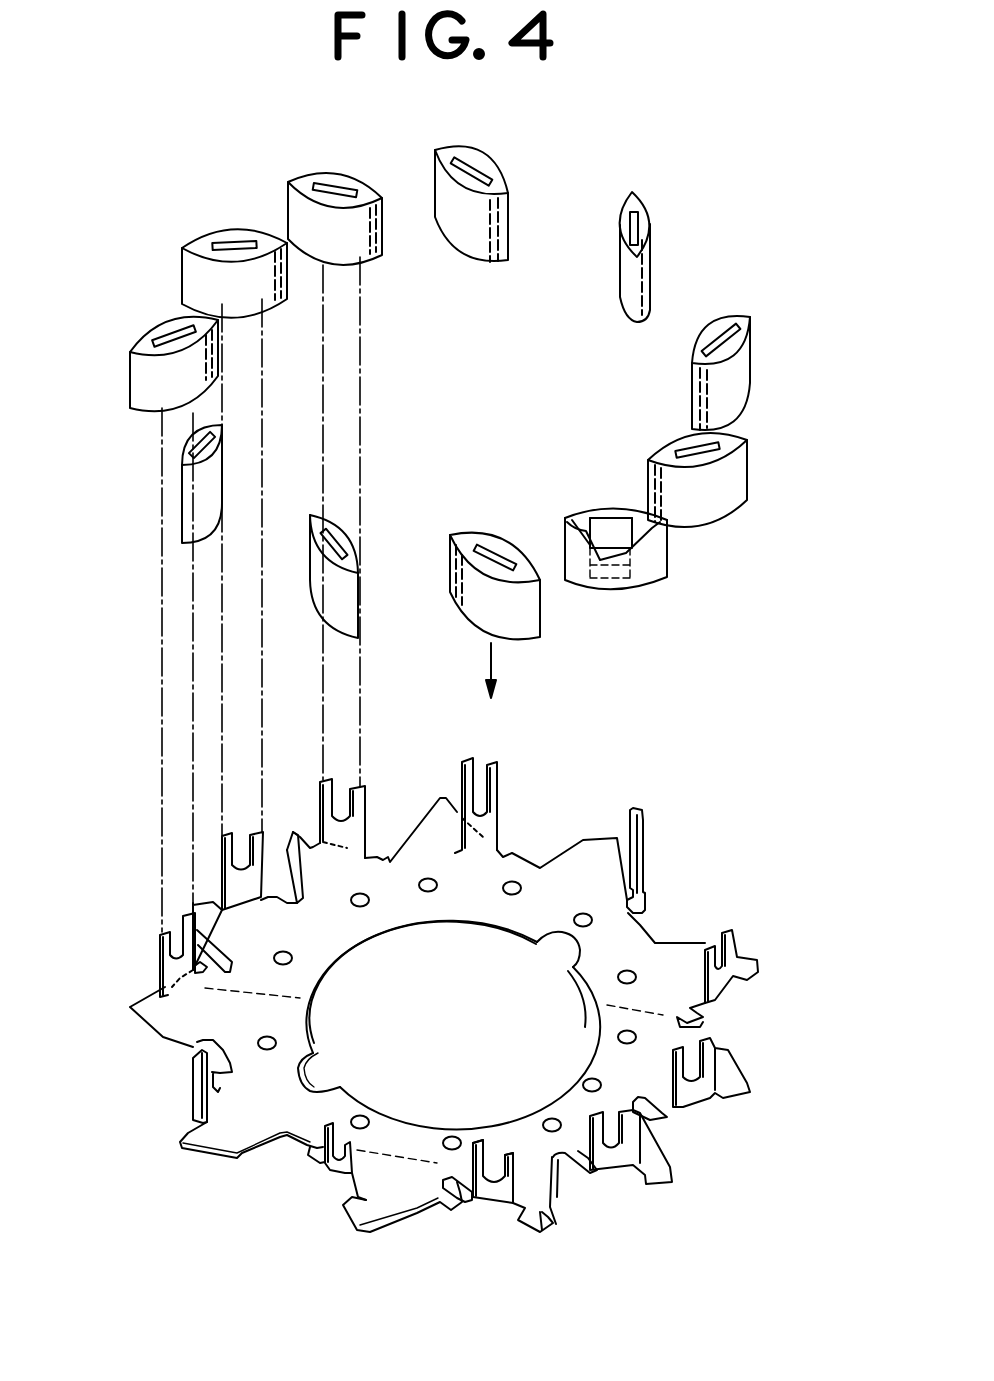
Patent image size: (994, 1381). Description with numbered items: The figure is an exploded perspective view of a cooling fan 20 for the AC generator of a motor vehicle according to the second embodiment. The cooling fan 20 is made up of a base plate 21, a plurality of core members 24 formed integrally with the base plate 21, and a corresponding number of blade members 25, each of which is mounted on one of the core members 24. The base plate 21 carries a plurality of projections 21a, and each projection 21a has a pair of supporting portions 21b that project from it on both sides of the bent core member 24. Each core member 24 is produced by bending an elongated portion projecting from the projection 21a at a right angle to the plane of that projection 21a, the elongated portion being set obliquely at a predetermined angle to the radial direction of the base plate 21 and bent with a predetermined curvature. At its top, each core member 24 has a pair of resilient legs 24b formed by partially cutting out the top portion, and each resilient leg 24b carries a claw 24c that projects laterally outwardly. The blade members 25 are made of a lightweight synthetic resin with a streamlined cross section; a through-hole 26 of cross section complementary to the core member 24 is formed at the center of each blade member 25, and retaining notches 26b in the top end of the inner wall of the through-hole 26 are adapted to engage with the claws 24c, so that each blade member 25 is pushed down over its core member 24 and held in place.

The cooling fan 20 is at (707, 867).
The base plate 21 is at (533, 1175).
The projection 21a is at (557, 1190).
The supporting portion 21b is at (455, 1195).
The core member 24 is at (493, 1200).
The resilient leg 24b is at (500, 1145).
The claw 24c is at (472, 1167).
The blade member 25 is at (496, 173).
The through-hole 26 is at (600, 547).
The retaining notch 26b is at (594, 512).